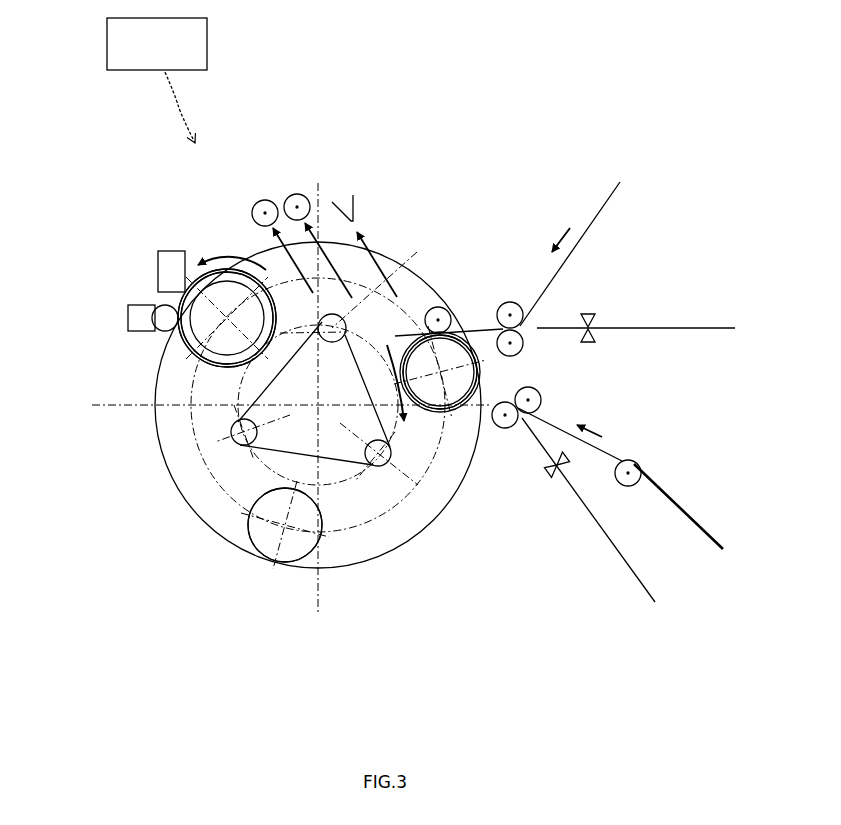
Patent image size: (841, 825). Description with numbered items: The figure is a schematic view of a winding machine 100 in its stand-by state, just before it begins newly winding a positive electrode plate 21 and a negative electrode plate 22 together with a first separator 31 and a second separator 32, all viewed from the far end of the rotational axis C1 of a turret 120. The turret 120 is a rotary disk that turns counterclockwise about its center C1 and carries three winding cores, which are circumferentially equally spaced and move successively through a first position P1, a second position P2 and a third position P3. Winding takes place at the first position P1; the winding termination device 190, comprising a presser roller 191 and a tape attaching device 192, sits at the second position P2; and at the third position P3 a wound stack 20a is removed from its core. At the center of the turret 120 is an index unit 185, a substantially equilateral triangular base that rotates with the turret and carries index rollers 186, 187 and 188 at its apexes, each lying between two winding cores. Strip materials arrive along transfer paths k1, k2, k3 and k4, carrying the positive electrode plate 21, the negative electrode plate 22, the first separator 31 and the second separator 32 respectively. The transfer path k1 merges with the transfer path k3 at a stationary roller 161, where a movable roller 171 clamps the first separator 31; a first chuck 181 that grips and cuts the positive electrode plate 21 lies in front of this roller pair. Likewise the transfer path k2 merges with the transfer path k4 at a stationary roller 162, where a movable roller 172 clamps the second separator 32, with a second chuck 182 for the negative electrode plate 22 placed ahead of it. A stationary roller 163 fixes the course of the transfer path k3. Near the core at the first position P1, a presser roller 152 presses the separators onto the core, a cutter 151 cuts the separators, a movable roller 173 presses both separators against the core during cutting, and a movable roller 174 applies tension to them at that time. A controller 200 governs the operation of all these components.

The winding machine 100 is at (483, 112).
The turret 120 is at (153, 437).
The controller 200 is at (107, 37).
The first position P1 is at (455, 430).
The second position P2 is at (192, 355).
The third position P3 is at (243, 532).
The wound stack 20a is at (183, 340).
The cutter 151 is at (355, 206).
The presser roller 152 is at (445, 310).
The stationary roller 161 is at (506, 428).
The stationary roller 162 is at (520, 348).
The stationary roller 163 is at (632, 486).
The movable roller 171 is at (541, 400).
The movable roller 172 is at (510, 302).
The movable roller 173 is at (297, 194).
The movable roller 174 is at (265, 200).
The first chuck 181 is at (545, 483).
The second chuck 182 is at (590, 312).
The index unit 185 is at (250, 457).
The index roller 186 is at (390, 470).
The index roller 187 is at (238, 447).
The index roller 188 is at (355, 348).
The winding termination device 190 is at (102, 324).
The presser roller 191 is at (137, 305).
The tape attaching device 192 is at (158, 252).
The rotational axis C1 is at (360, 288).
The positive electrode plate 21 is at (627, 570).
The negative electrode plate 22 is at (735, 326).
The first separator 31 is at (722, 545).
The second separator 32 is at (605, 200).
The transfer path k1 is at (640, 598).
The transfer path k2 is at (735, 332).
The transfer path k3 is at (718, 552).
The transfer path k4 is at (624, 190).